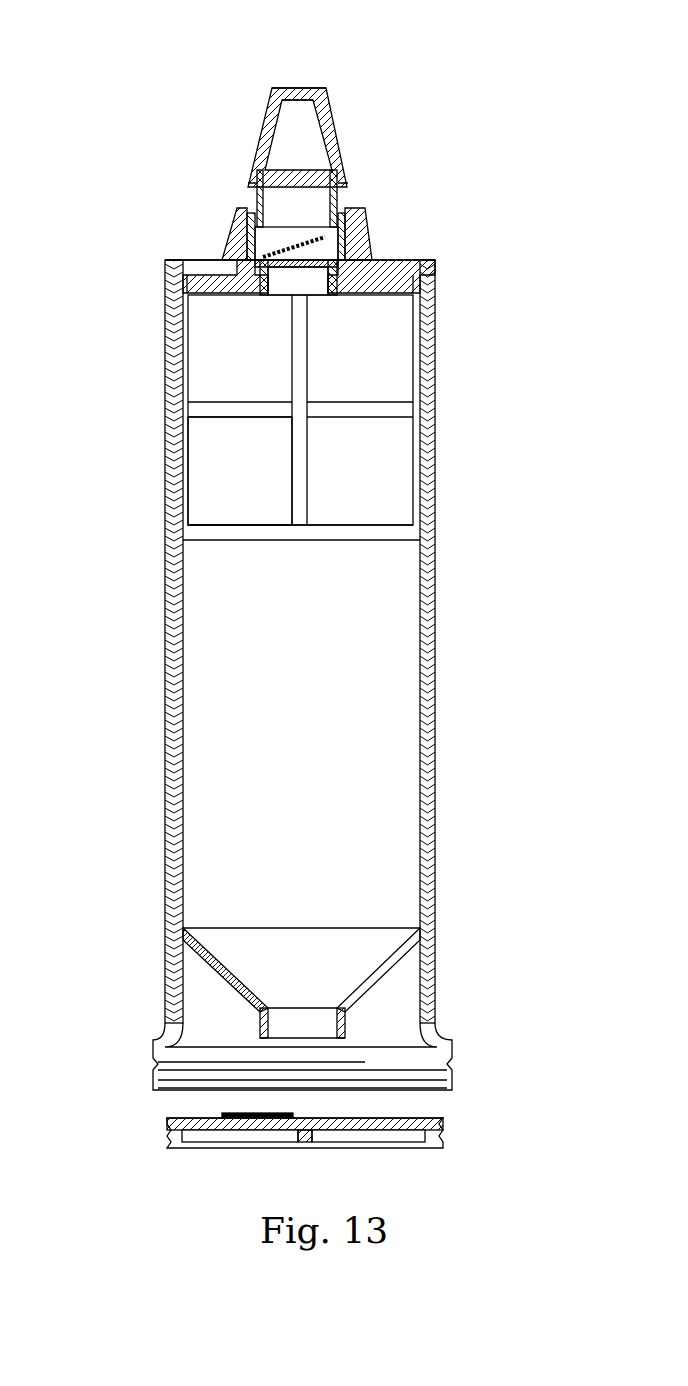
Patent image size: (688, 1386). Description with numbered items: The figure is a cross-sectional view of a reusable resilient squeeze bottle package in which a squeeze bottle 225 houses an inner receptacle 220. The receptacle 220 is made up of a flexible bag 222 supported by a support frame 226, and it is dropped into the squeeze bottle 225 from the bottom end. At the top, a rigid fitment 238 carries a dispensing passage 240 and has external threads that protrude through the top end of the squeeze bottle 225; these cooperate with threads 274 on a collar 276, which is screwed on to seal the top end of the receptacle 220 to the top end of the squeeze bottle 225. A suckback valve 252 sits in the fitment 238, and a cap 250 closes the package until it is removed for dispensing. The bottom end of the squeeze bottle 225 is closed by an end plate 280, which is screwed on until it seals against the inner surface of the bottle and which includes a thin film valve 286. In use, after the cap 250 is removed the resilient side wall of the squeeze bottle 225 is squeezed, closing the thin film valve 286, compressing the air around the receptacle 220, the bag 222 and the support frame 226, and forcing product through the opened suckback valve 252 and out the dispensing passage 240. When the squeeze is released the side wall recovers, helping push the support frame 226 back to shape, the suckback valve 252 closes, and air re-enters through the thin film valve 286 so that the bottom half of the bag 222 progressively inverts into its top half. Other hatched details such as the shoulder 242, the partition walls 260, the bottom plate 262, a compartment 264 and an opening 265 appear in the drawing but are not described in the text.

The inner receptacle 220 is at (402, 967).
The flexible bag 222 is at (434, 728).
The squeeze bottle 225 is at (437, 612).
The support frame 226 is at (357, 405).
The rigid fitment 238 is at (337, 133).
The dispensing passage 240 is at (317, 90).
The shoulder 242 is at (193, 280).
The cap 250 is at (272, 90).
The suckback valve 252 is at (308, 237).
The partition walls 260 is at (173, 455).
The bottom plate of insert 262 is at (352, 537).
The compartment 264 is at (283, 410).
The opening 265 is at (292, 282).
The threads 274 is at (363, 213).
The collar 276 is at (233, 215).
The end plate 280 is at (437, 1121).
The thin film valve 286 is at (262, 1125).